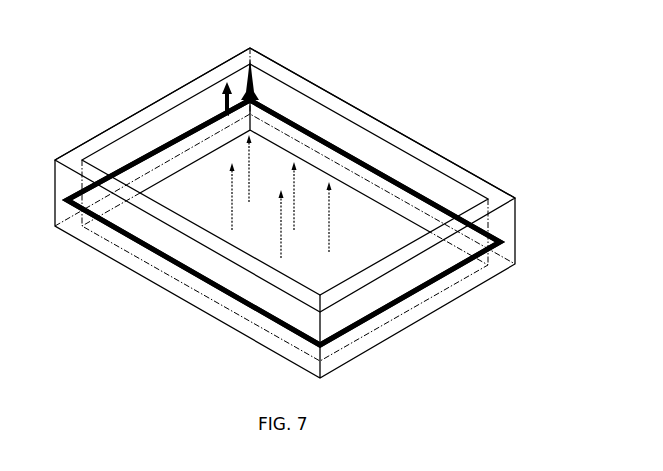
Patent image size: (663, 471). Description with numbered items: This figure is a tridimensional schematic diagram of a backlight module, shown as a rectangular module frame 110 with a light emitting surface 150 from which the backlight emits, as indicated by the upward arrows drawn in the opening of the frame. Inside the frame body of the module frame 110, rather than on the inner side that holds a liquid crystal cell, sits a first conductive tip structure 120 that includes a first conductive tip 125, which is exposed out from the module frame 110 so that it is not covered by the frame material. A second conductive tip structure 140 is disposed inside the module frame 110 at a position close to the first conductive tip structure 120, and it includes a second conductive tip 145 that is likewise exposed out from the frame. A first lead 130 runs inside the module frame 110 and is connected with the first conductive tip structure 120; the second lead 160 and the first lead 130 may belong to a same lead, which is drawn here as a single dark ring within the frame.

The module frame 110 is at (172, 206).
The first conductive tip structure 120 is at (287, 70).
The first conductive tip 125 is at (241, 48).
The first lead 130 is at (202, 279).
The second conductive tip structure 140 is at (206, 77).
The second conductive tip 145 is at (252, 68).
The light emitting surface 150 is at (337, 98).
The second lead 160 is at (202, 279).